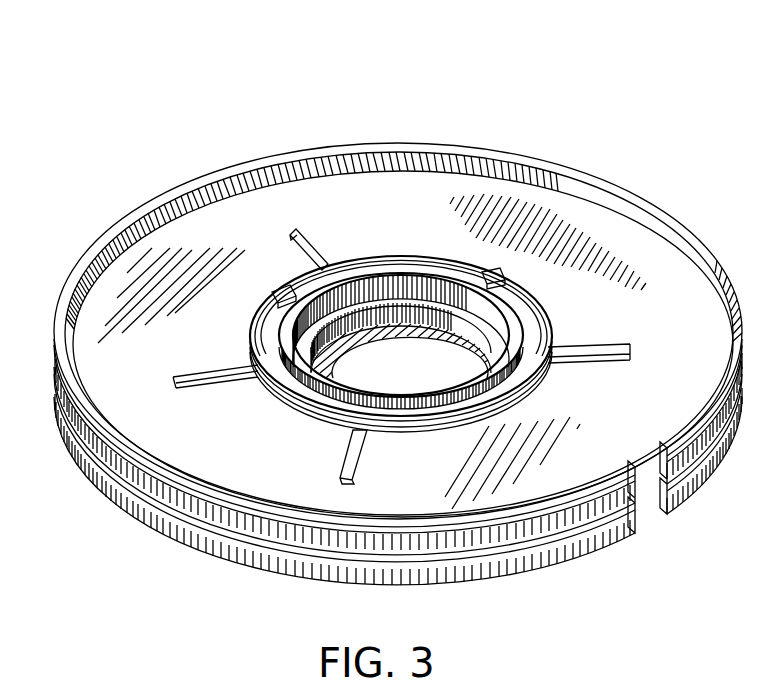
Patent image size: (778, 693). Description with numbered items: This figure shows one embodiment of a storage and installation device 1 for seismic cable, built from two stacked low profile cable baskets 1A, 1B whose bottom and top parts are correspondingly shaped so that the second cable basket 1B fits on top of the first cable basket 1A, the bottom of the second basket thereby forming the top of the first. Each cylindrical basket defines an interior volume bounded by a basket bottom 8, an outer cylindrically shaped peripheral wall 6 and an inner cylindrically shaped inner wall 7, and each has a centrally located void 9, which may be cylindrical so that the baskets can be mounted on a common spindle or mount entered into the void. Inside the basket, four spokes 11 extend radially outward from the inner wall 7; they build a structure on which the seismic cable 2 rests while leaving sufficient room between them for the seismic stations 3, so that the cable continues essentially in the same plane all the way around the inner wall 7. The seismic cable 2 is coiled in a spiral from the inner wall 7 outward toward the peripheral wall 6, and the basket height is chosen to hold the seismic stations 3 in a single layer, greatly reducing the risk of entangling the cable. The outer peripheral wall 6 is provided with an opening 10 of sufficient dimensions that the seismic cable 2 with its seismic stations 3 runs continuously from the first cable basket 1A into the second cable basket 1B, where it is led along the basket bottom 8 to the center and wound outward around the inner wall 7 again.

The storage and installation device 1 is at (598, 75).
The first cable basket 1A is at (145, 480).
The second cable basket 1B is at (182, 530).
The seismic cable 2 is at (622, 326).
The seismic station 3 is at (502, 276).
The outer peripheral wall 6 is at (265, 172).
The inner wall 7 is at (370, 292).
The basket bottom 8 is at (150, 274).
The centrally located void 9 is at (414, 360).
The opening 10 is at (648, 455).
The spoke 11 is at (298, 237).